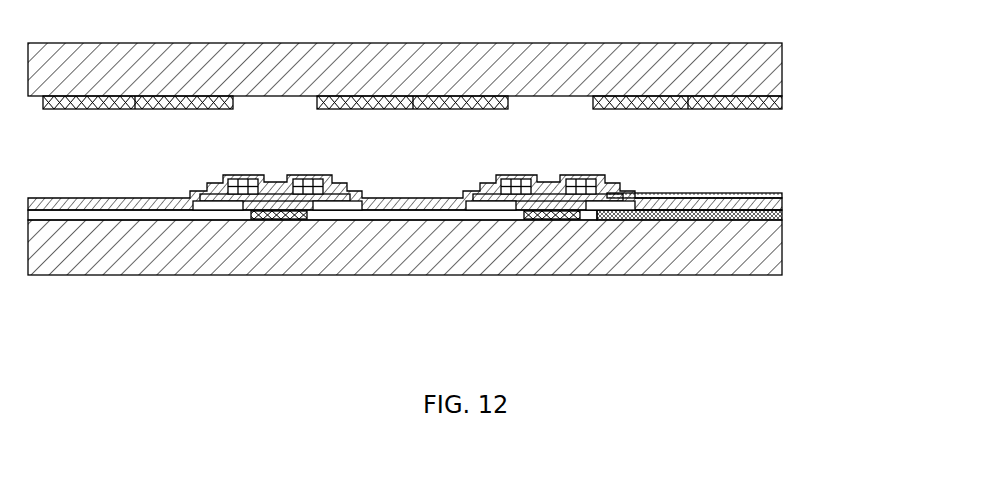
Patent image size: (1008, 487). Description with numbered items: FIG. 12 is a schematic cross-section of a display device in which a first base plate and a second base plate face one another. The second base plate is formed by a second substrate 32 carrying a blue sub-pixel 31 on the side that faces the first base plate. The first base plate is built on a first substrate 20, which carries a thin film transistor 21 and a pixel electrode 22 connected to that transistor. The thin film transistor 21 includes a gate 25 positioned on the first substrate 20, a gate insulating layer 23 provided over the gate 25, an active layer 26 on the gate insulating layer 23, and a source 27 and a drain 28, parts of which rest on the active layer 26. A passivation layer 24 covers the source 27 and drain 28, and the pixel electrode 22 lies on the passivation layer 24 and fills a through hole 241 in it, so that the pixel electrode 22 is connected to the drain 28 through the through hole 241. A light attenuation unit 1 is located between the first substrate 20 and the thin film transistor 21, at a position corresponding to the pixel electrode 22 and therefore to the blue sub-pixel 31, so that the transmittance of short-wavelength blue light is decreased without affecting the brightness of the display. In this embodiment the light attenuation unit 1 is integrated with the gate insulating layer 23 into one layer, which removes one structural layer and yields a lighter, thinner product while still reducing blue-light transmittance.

The light attenuation unit 1 is at (733, 215).
The first substrate 20 is at (723, 260).
The thin film transistor 21 is at (550, 281).
The pixel electrode 22 is at (723, 196).
The gate insulating layer 23 is at (417, 213).
The passivation layer 24 is at (733, 204).
The through hole 241 is at (625, 203).
The gate 25 is at (559, 218).
The active layer 26 is at (527, 192).
The source 27 is at (480, 205).
The drain 28 is at (600, 203).
The blue sub-pixel 31 is at (733, 99).
The second substrate 32 is at (733, 62).